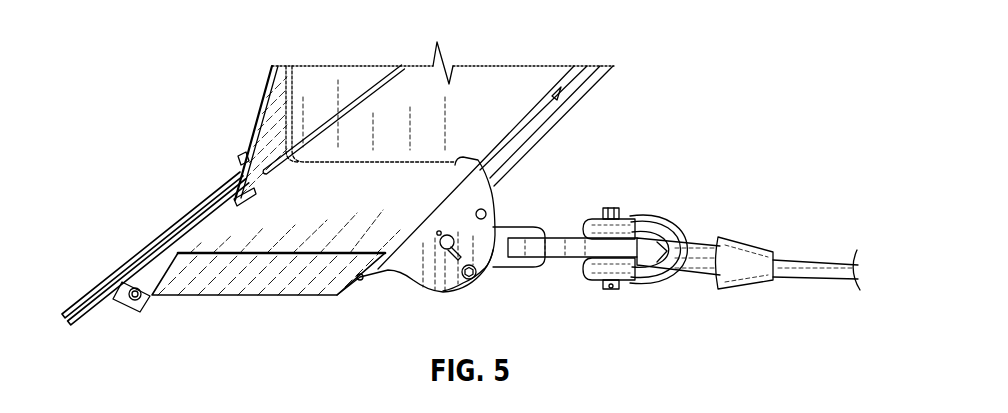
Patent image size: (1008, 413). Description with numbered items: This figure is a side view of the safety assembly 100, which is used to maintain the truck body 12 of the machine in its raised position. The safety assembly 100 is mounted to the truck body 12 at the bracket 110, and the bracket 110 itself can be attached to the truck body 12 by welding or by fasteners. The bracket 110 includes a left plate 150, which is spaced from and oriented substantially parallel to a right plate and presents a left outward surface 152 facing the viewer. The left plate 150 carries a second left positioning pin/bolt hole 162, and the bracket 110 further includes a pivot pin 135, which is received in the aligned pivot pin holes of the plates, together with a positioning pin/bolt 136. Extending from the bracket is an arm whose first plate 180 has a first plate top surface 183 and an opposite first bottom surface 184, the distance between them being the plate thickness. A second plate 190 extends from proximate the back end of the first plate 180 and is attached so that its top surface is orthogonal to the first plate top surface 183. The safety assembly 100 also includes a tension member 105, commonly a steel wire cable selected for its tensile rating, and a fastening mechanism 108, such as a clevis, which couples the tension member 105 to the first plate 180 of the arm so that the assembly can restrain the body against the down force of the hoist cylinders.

The truck body 12 is at (340, 180).
The safety assembly 100 is at (669, 116).
The tension member 105 is at (833, 273).
The fastening mechanism 108 is at (652, 214).
The bracket 110 is at (450, 304).
The pivot pin 135 is at (443, 236).
The positioning pin/bolt 136 is at (477, 276).
The left plate 150 is at (437, 285).
The left outward surface 152 is at (420, 272).
The second left positioning pin/bolt hole 162 is at (481, 209).
The first plate 180 is at (555, 226).
The first plate top surface 183 is at (582, 226).
The first bottom surface 184 is at (574, 264).
The second plate 190 is at (525, 212).